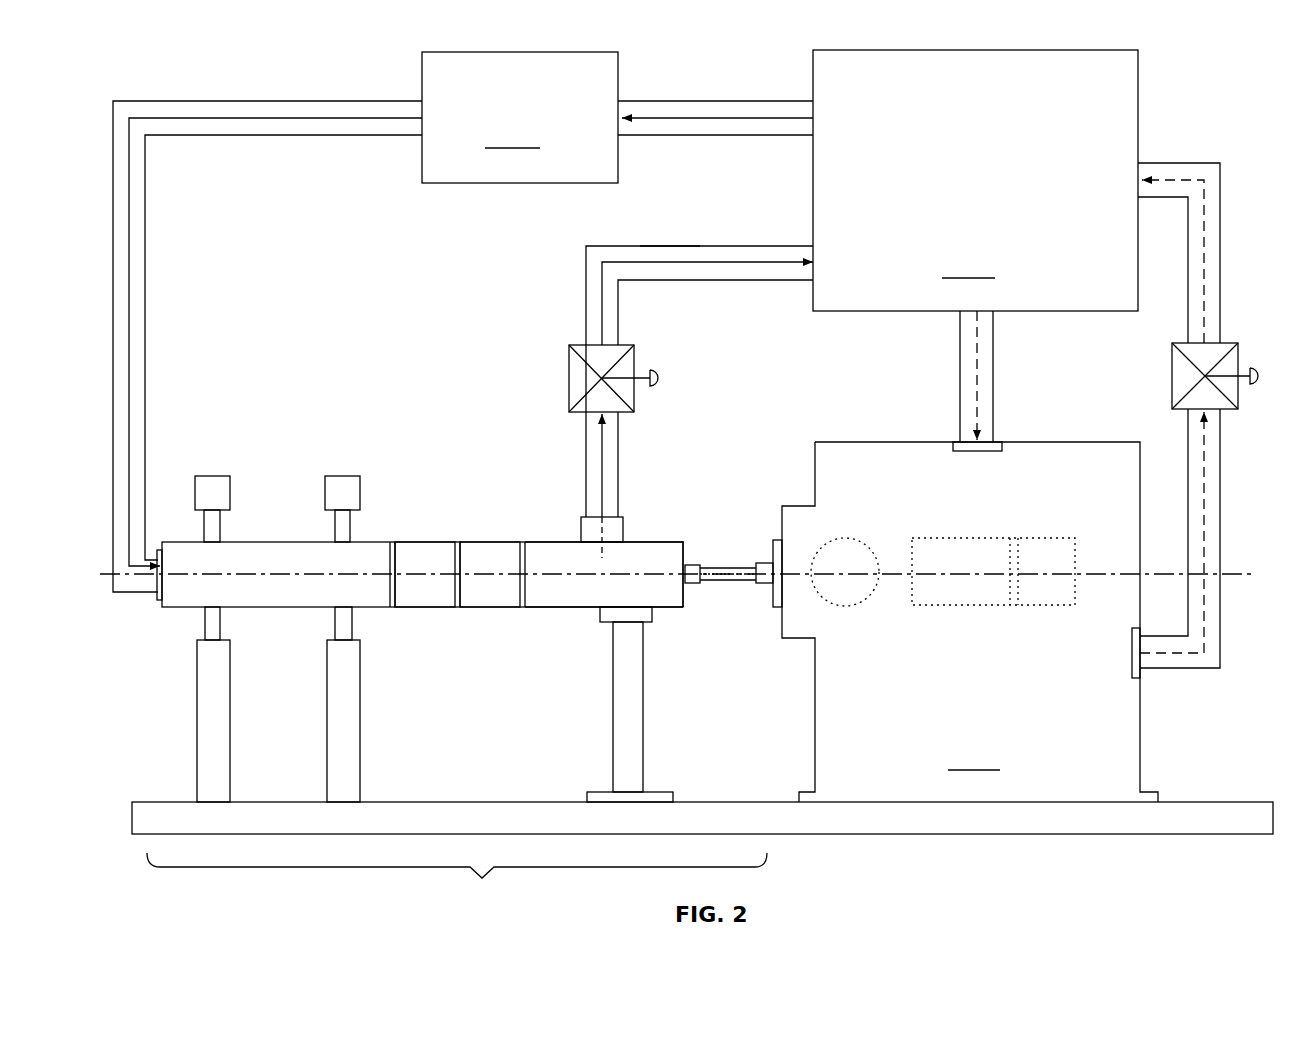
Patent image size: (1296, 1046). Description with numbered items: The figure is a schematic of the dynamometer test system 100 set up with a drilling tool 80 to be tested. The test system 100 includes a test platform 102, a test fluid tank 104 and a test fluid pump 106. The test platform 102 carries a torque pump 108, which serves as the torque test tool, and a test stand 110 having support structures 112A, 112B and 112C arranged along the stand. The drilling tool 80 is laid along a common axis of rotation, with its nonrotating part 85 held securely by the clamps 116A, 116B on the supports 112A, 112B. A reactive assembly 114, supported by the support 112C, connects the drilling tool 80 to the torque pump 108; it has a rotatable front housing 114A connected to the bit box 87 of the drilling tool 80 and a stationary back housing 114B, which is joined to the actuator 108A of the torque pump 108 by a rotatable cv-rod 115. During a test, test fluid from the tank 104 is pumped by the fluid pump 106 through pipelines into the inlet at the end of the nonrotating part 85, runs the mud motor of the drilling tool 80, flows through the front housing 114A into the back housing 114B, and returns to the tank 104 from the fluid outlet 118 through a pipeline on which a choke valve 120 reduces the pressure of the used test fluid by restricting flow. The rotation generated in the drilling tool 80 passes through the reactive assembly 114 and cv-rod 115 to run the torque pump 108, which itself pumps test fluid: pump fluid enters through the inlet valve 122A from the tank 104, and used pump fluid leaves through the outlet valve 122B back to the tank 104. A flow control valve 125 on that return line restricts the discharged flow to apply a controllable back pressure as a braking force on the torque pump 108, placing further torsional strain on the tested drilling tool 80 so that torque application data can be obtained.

The test system 100 is at (1112, 32).
The test platform 102 is at (1152, 755).
The test fluid tank 104 is at (975, 180).
The test fluid pump 106 is at (520, 117).
The torque pump 108 is at (970, 622).
The actuator 108A is at (772, 555).
The test stand 110 is at (517, 873).
The support structure 112A is at (230, 760).
The support structure 112B is at (400, 742).
The support structure 112C is at (645, 752).
The reactive assembly 114 is at (545, 540).
The front housing 114A is at (495, 607).
The back housing 114B is at (580, 607).
The cv-rod 115 is at (735, 580).
The clamp 116A is at (225, 528).
The clamp 116B is at (325, 523).
The fluid outlet 118 is at (620, 540).
The choke valve 120 is at (568, 365).
The inlet valve 122A is at (985, 453).
The outlet valve 122B is at (1130, 650).
The flow control valve 125 is at (1170, 385).
The drilling tool 80 is at (290, 612).
The nonrotating part 85 is at (366, 540).
The bit box 87 is at (420, 607).